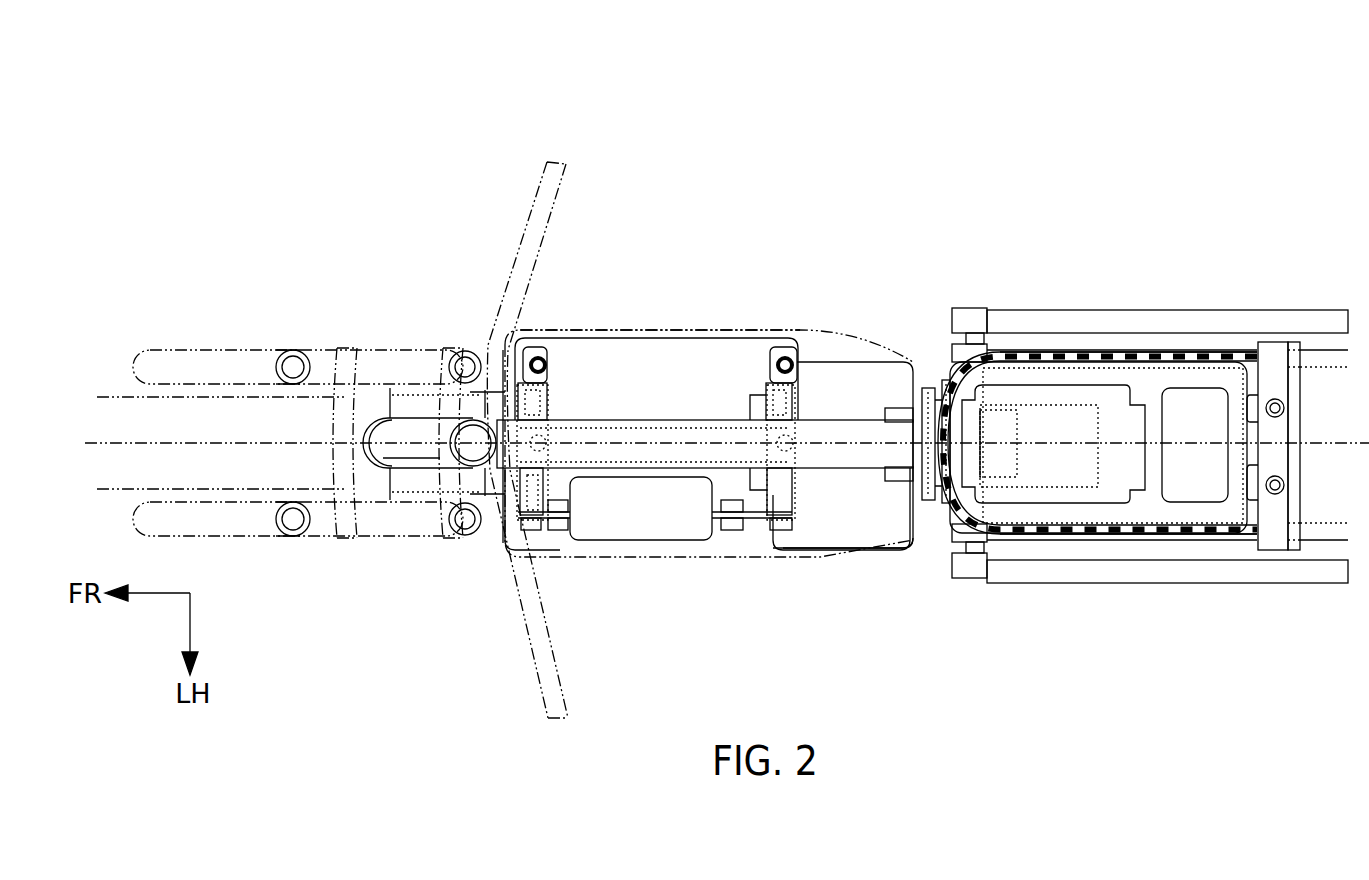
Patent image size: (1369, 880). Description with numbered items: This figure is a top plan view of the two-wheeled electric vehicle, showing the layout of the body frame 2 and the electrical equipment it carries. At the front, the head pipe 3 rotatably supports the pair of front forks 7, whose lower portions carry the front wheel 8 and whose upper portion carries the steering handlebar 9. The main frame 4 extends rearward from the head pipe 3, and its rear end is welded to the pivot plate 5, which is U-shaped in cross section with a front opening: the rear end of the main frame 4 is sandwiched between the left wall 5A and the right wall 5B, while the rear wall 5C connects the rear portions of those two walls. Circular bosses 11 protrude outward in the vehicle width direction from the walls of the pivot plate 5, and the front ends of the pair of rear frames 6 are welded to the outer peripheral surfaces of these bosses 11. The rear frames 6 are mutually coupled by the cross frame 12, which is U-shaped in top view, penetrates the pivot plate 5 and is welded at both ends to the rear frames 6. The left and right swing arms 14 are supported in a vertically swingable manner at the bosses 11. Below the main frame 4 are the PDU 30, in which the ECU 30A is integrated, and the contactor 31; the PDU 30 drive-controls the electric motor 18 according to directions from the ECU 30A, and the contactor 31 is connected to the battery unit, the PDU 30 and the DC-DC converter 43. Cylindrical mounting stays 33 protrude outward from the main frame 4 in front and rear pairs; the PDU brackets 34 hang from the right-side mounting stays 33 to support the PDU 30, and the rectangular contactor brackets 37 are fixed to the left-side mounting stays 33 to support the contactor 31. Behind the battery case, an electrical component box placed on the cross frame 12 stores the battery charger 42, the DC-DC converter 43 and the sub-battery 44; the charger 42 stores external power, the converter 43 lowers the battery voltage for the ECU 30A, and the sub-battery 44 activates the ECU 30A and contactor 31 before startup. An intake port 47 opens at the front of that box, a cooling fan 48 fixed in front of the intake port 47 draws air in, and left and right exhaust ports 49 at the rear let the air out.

The body frame 2 is at (698, 420).
The head pipe 3 is at (417, 432).
The main frame 4 is at (652, 420).
The pivot plate 5 is at (895, 407).
The left wall 5A is at (895, 481).
The right wall 5B is at (896, 408).
The rear wall 5C is at (1000, 427).
The rear frames 6 is at (1247, 350).
The front forks 7 is at (321, 362).
The front wheel 8 is at (204, 395).
The steering handlebar 9 is at (538, 198).
The circular bosses 11 is at (972, 347).
The cross frame 12 is at (1056, 353).
The swing arms 14 is at (1297, 322).
The electric motor 18 is at (870, 553).
The PDU (Power Drive Unit) 30 is at (625, 338).
The ECU (Electrical Control Unit) 30A is at (660, 278).
The contactor 31 is at (647, 540).
The mounting stays 33 is at (523, 500).
The PDU brackets 34 is at (542, 350).
The contactor brackets 37 is at (545, 528).
The battery charger 42 is at (1118, 395).
The DC-DC converter 43 is at (1097, 468).
The sub-battery 44 is at (1213, 467).
The intake port 47 is at (935, 486).
The cooling fan 48 is at (928, 388).
The exhaust ports 49 is at (1202, 353).